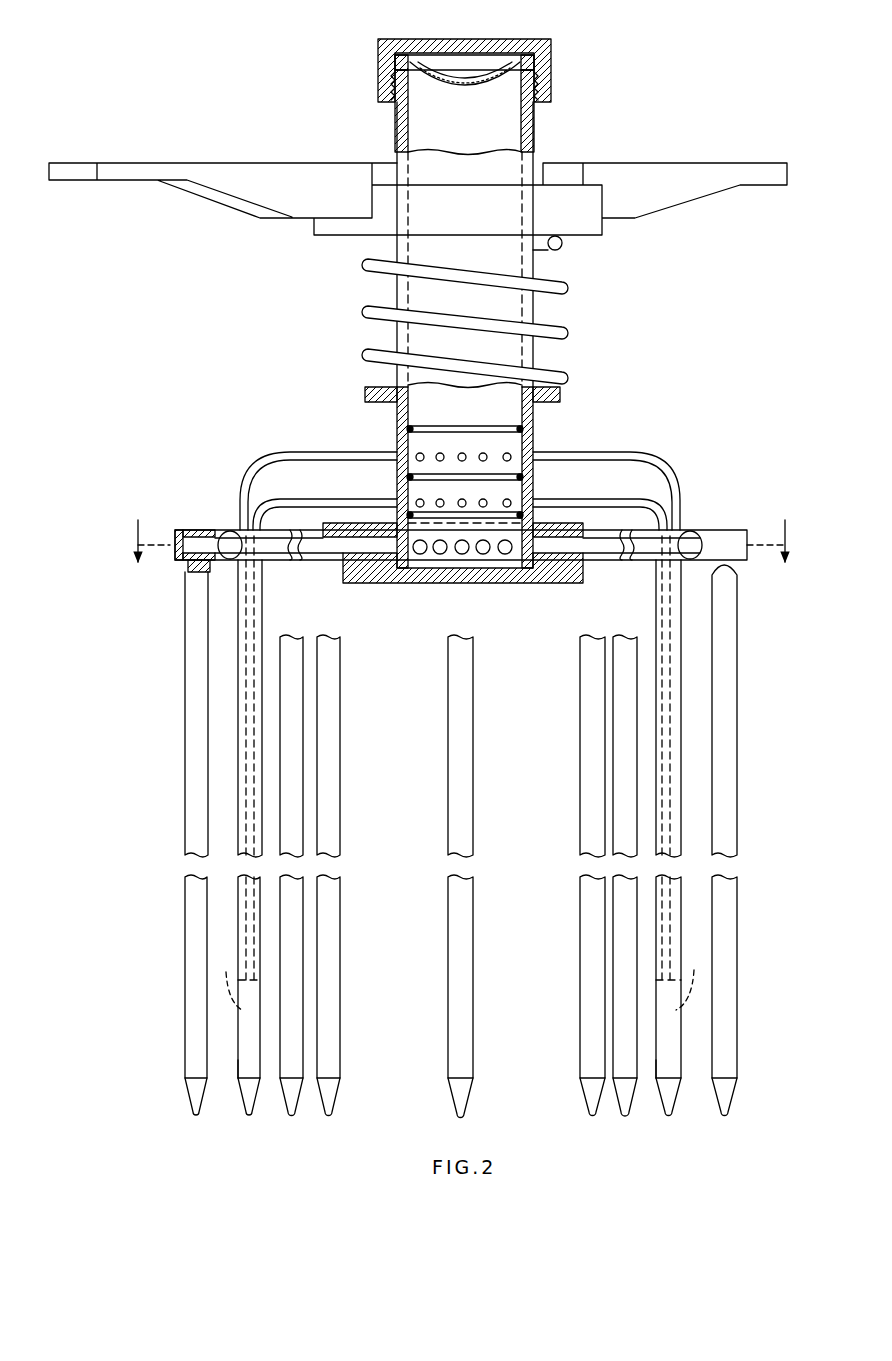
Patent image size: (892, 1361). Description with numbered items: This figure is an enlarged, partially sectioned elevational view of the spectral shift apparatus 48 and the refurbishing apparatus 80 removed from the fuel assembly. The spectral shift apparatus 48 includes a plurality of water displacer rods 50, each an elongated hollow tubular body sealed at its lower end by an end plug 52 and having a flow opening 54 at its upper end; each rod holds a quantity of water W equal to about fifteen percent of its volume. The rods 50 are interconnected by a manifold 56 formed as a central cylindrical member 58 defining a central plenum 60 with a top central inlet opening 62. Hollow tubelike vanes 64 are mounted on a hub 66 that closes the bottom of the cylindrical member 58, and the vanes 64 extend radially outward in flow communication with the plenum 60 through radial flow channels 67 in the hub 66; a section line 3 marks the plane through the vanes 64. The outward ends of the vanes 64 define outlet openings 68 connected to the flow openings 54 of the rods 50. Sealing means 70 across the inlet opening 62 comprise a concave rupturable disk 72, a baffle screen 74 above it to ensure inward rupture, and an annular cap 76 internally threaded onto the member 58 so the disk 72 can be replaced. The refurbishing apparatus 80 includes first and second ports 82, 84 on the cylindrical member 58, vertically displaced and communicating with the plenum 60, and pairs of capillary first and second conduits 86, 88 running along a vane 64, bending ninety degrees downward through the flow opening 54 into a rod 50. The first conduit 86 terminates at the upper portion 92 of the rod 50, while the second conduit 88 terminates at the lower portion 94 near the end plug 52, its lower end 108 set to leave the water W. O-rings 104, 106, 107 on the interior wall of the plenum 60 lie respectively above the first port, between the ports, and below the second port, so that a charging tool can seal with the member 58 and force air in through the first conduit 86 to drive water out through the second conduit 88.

The section line 3- 3 is at (461, 541).
The spectral shift apparatus 48 is at (439, 846).
The water displacer rods 50 is at (235, 886).
The end plug 52 is at (290, 1115).
The flow opening 54 is at (198, 569).
The manifold 56 is at (376, 588).
The central cylindrical member 58 is at (515, 313).
The central plenum 60 is at (395, 385).
The top central inlet opening 62 is at (404, 98).
The hollow tubelike vanes 64 is at (204, 530).
The hub 66 is at (532, 588).
The radial flow channels 67 is at (360, 522).
The outlet openings 68 is at (191, 540).
The sealing means 70 is at (519, 38).
The rupturable disk 72 is at (468, 90).
The baffle screen 74 is at (450, 62).
The annular cap 76 is at (549, 75).
The refurbishing apparatus 80 is at (471, 461).
The first ports 82 is at (462, 455).
The second ports 84 is at (462, 503).
The first conduits 86 is at (292, 453).
The second conduits 88 is at (313, 500).
The upper portion of displacer rod 92 is at (240, 613).
The lower portion of displacer rod 94 is at (242, 1054).
The first O-ring 104 is at (486, 430).
The second O-ring 106 is at (408, 478).
The third O-ring 107 is at (540, 527).
The lower end of second conduit 108 is at (246, 1004).
The water W is at (455, 979).